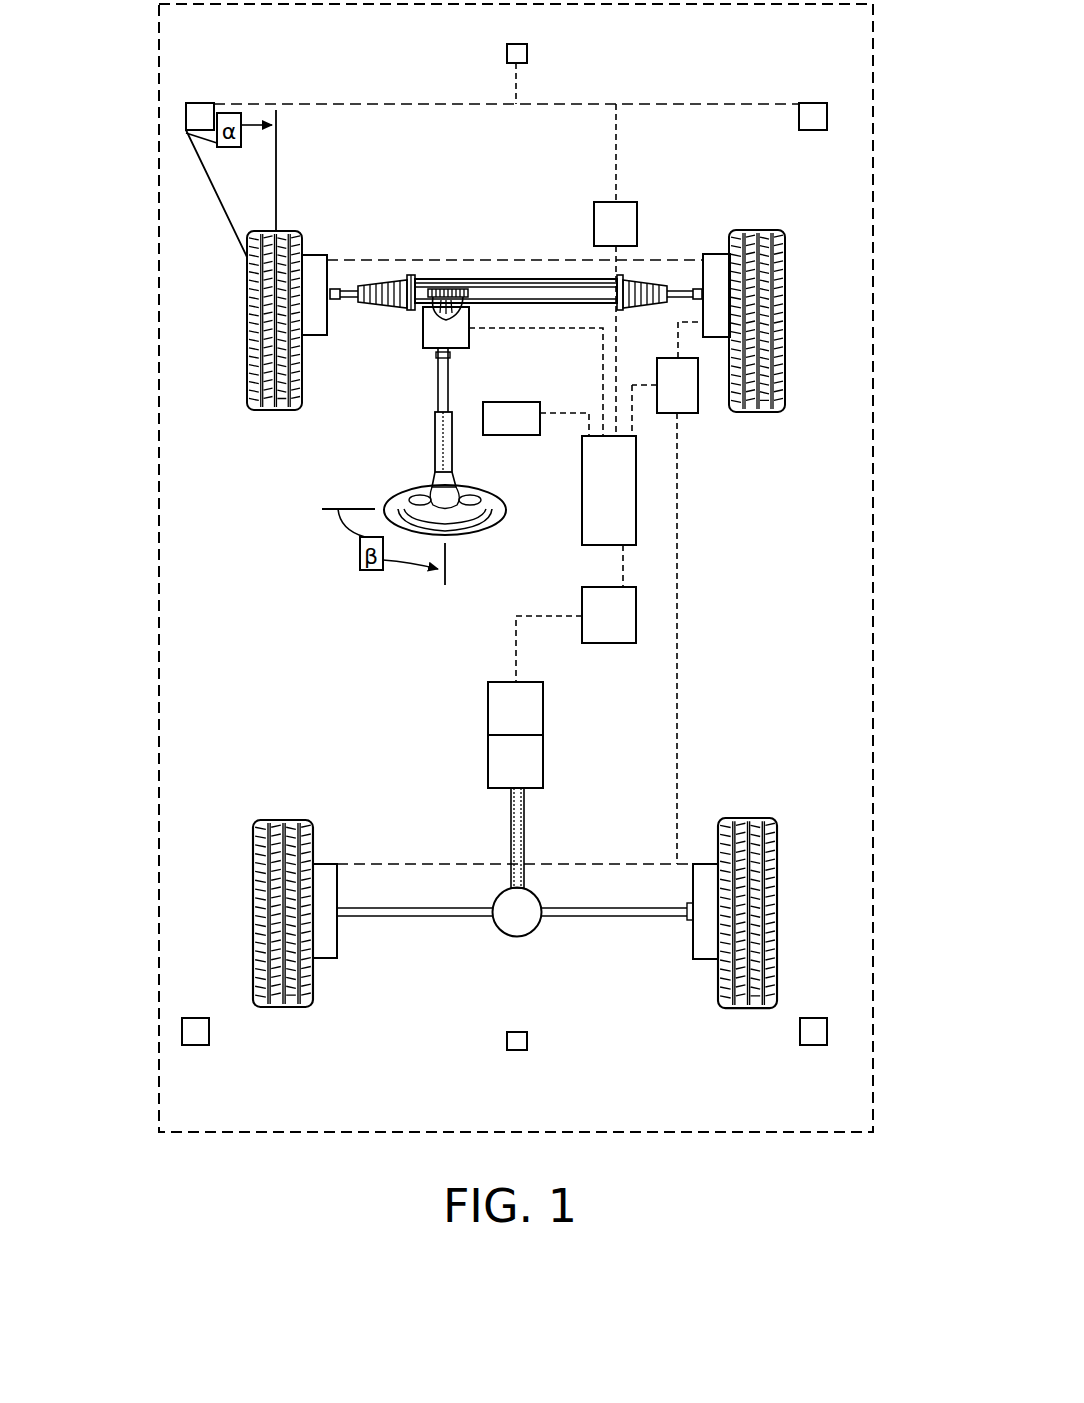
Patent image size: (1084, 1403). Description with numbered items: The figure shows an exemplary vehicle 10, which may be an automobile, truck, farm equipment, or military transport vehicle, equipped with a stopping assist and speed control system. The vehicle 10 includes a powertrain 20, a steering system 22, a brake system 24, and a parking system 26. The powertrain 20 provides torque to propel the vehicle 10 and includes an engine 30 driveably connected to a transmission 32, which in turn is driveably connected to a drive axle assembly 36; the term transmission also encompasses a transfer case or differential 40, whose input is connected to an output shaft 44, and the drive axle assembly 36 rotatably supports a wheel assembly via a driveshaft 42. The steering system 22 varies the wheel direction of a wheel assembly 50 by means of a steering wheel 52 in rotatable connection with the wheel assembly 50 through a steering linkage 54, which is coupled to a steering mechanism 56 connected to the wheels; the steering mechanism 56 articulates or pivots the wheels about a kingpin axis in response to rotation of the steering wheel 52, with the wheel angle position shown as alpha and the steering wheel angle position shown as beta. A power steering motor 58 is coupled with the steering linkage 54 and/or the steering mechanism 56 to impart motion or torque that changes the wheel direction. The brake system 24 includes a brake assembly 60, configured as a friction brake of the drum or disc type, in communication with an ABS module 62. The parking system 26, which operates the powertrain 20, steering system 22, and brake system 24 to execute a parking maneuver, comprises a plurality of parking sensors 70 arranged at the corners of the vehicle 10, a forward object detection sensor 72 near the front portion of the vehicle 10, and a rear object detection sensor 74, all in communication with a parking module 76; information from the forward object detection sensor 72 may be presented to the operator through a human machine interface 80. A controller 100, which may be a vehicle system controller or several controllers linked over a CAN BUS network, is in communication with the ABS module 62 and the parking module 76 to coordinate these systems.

The vehicle 10 is at (157, 327).
The powertrain 20 is at (394, 738).
The steering system 22 is at (400, 362).
The brake system 24 is at (693, 440).
The parking system 26 is at (530, 135).
The engine 30 is at (498, 695).
The transmission 32 is at (498, 773).
The drive axle assembly 36 is at (636, 622).
The differential 40 is at (535, 932).
The driveshaft 42 is at (407, 917).
The output shaft 44 is at (520, 823).
The wheel assembly 50 is at (424, 421).
The steering wheel 52 is at (477, 535).
The steering linkage 54 is at (452, 443).
The steering mechanism 56 is at (440, 282).
The power steering motor 58 is at (423, 341).
The brake assembly 60 is at (317, 262).
The ABS module 62 is at (690, 405).
The parking sensors 70 is at (200, 108).
The forward object detection sensor 72 is at (527, 48).
The rear object detection sensor 74 is at (527, 1037).
The parking module 76 is at (598, 215).
The human machine interface 80 is at (514, 414).
The controller 100 is at (588, 520).